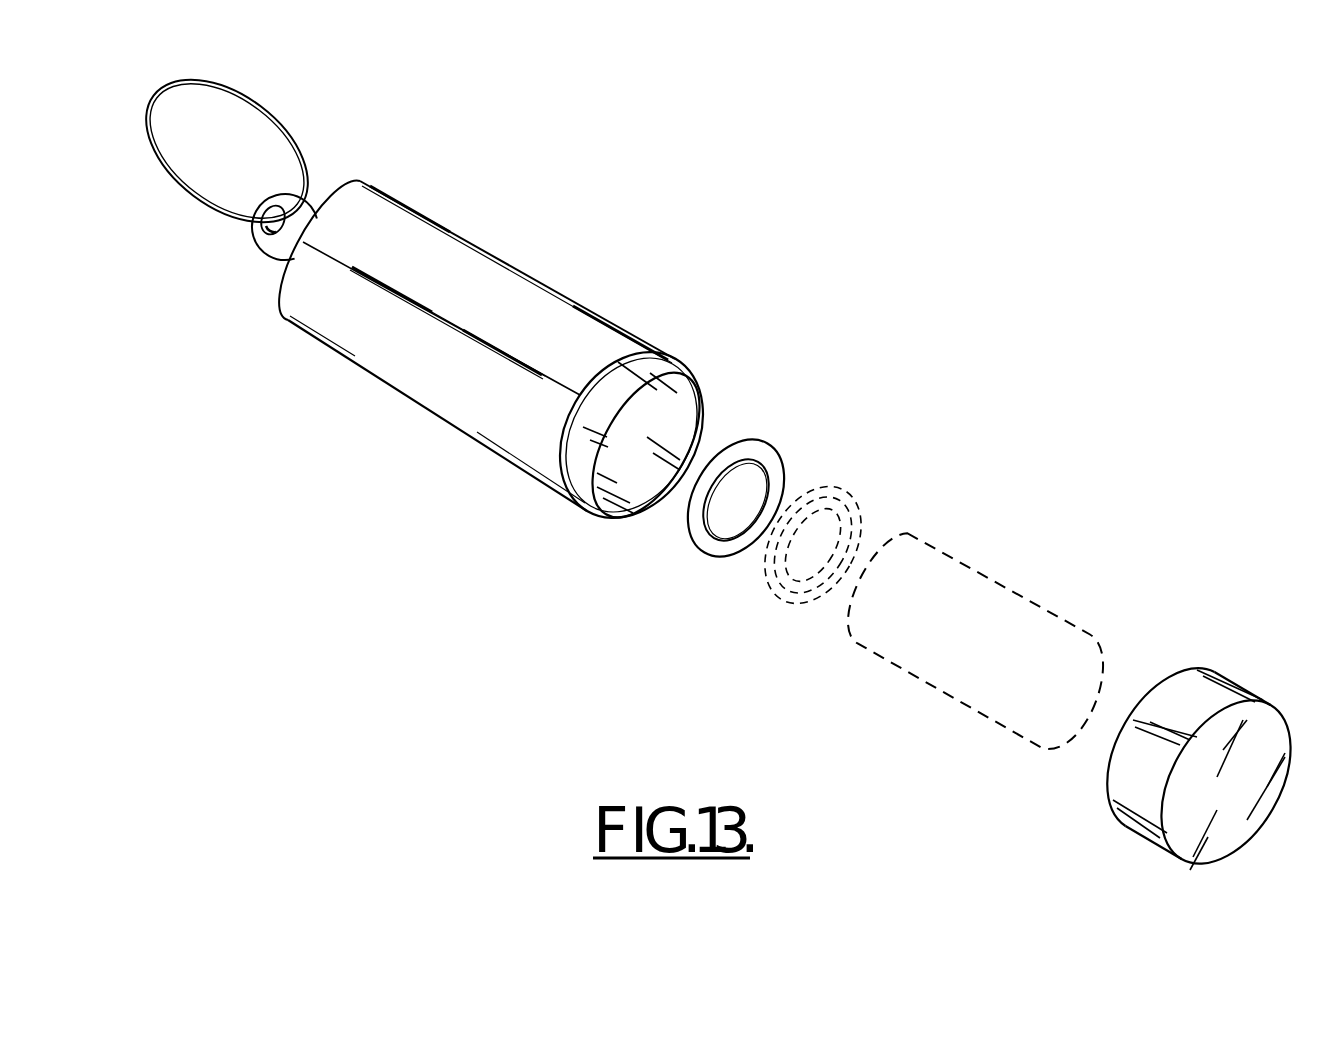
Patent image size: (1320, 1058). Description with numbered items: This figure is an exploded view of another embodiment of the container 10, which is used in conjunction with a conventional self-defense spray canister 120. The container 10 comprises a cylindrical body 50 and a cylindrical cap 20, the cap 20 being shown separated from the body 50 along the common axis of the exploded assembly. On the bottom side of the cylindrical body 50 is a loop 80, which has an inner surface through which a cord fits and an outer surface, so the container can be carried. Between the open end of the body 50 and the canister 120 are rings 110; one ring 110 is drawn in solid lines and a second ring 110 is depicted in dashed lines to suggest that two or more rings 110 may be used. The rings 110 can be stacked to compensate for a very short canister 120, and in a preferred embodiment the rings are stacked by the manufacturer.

The container 10 is at (515, 228).
The cap 20 is at (1181, 656).
The cylindrical body 50 is at (558, 276).
The loop 80 is at (316, 199).
The rings 110 is at (753, 431).
The canister 120 is at (960, 555).